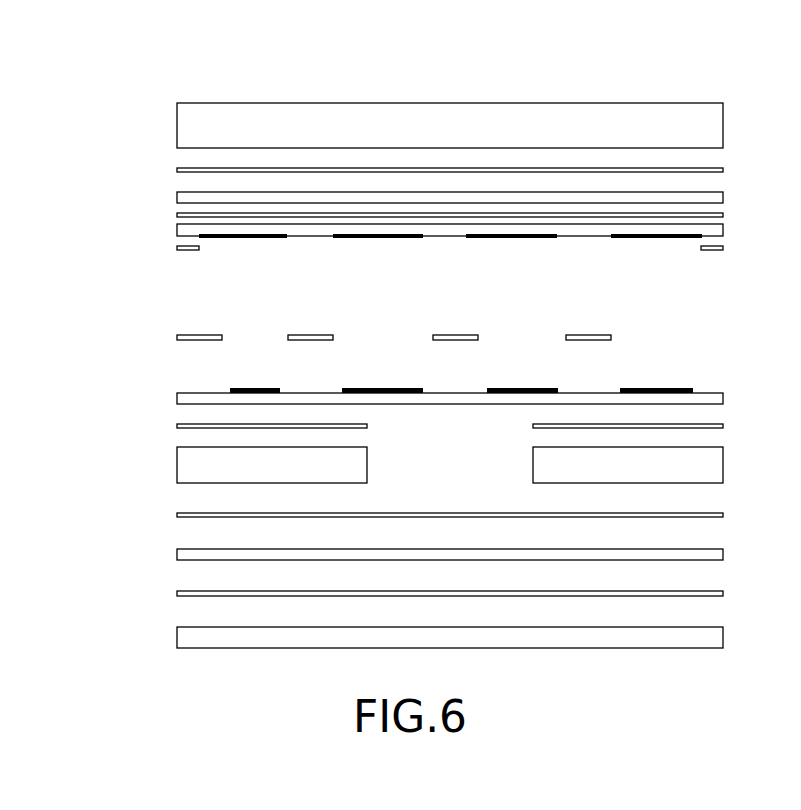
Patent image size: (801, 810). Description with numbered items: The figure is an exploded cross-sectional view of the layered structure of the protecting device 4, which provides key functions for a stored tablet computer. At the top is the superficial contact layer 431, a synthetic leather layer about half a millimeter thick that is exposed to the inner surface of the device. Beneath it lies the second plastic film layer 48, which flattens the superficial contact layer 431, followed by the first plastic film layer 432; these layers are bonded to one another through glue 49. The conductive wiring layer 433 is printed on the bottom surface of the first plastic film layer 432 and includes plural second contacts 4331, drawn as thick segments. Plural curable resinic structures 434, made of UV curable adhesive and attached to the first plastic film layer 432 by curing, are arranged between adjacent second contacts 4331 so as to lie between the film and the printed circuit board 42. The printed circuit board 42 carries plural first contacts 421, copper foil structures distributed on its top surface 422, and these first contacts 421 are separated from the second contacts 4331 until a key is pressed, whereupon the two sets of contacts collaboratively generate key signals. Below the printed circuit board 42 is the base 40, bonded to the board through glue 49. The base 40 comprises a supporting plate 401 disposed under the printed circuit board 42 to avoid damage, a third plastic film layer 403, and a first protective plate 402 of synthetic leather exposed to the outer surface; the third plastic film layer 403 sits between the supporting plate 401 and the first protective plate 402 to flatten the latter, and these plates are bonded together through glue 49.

The protecting device 4 is at (256, 52).
The superficial contact layer 431 is at (622, 115).
The glue 49 is at (708, 168).
The second plastic film layer 48 is at (186, 197).
The first plastic film layer 432 is at (186, 230).
The conductive wiring layer 433 is at (452, 266).
The second contacts 4331 is at (520, 240).
The curable resinic structures 434 is at (200, 335).
The printed circuit board 42 is at (446, 371).
The top surface 422 is at (185, 395).
The first contacts 421 is at (523, 388).
The base 40 is at (384, 534).
The supporting plate 401 is at (185, 472).
The third plastic film layer 403 is at (185, 555).
The first protective plate 402 is at (411, 616).